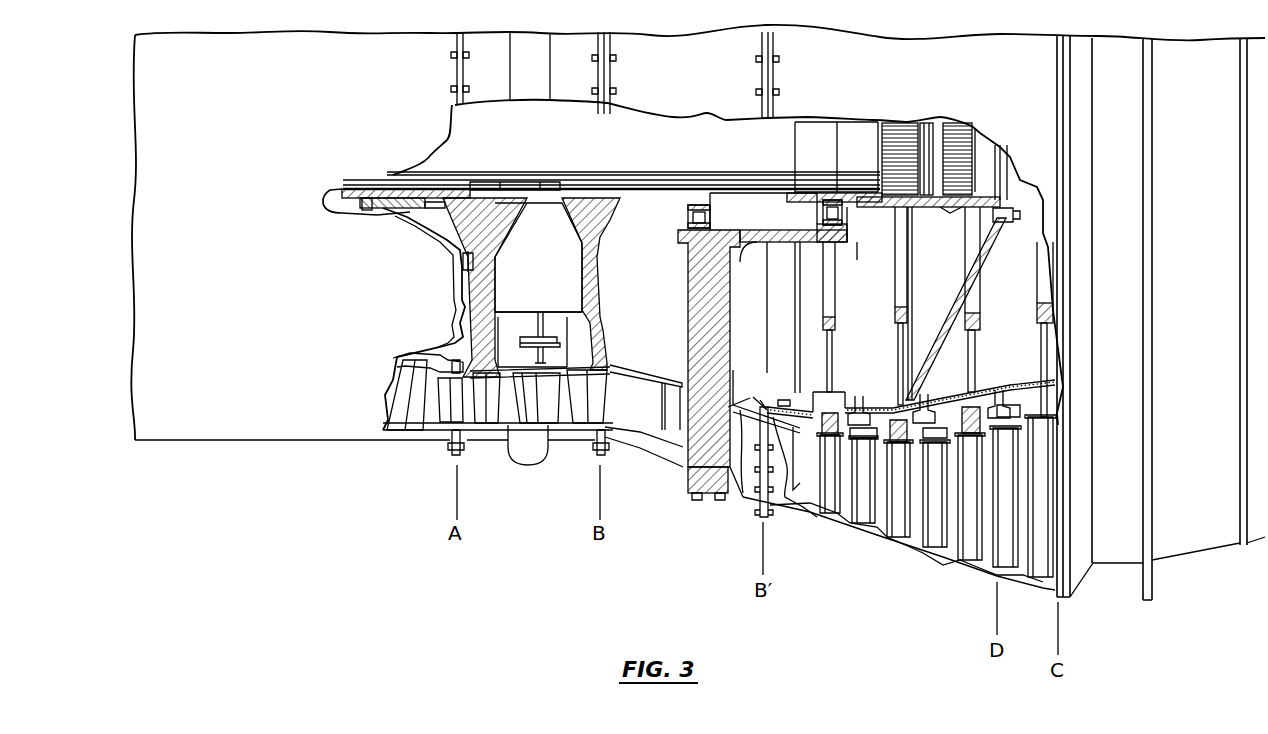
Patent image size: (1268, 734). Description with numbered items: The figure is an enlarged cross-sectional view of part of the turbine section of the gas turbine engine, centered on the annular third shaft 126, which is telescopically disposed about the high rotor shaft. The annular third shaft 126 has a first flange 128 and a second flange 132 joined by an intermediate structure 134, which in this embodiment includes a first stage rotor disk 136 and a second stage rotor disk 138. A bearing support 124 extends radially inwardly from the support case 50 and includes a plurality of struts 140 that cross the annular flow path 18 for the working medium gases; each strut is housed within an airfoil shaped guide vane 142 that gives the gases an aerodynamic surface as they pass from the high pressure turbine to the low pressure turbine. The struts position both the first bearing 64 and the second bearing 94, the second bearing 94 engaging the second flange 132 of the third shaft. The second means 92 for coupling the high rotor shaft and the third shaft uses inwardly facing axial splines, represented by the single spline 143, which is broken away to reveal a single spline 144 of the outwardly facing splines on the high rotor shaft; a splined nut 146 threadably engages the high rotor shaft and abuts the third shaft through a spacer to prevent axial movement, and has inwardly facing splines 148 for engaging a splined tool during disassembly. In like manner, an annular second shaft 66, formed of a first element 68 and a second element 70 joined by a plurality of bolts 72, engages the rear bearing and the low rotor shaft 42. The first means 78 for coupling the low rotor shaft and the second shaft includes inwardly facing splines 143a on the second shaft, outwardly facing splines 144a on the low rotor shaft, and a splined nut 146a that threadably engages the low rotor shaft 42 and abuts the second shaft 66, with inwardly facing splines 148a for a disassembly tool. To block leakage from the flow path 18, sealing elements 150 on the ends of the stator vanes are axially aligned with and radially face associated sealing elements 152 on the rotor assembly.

The annular flow path 18 is at (645, 408).
The low rotor shaft 42 is at (682, 142).
The support case 50 is at (677, 457).
The first bearing 64 is at (822, 214).
The annular second shaft 66 is at (957, 237).
The first element 68 is at (925, 208).
The second element 70 is at (975, 265).
The bolts 72 is at (1014, 208).
The first means for coupling 78 is at (919, 110).
The second means for coupling 92 is at (517, 166).
The second bearing 94 is at (712, 216).
The bearing support 124 is at (673, 303).
The annular third shaft 126 is at (416, 237).
The first flange 128 is at (370, 212).
The second flange 132 is at (668, 215).
The intermediate structure 134 is at (560, 310).
The first stage rotor disk 136 is at (470, 283).
The second stage rotor disk 138 is at (594, 260).
The struts 140 is at (717, 297).
The guide vane 142 is at (676, 395).
The spline 143 is at (407, 215).
The splines 143a is at (865, 208).
The spline 144 is at (370, 189).
The splines 144a is at (838, 192).
The splined nut 146 is at (538, 257).
The splined nut 146a is at (957, 219).
The inwardly facing splines 148 is at (512, 195).
The inwardly facing splines 148a is at (960, 152).
The sealing elements 150 is at (920, 408).
The sealing elements 152 is at (947, 401).